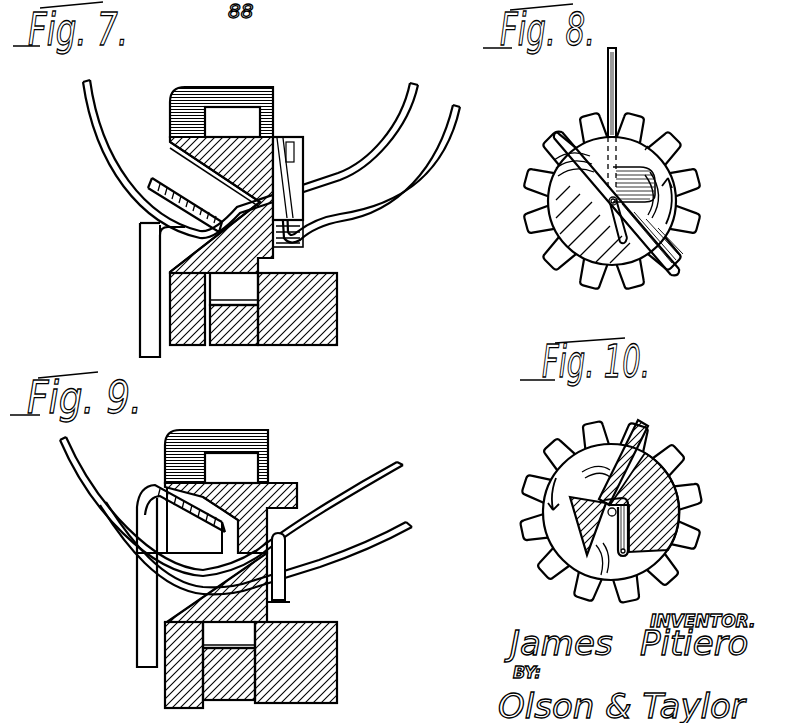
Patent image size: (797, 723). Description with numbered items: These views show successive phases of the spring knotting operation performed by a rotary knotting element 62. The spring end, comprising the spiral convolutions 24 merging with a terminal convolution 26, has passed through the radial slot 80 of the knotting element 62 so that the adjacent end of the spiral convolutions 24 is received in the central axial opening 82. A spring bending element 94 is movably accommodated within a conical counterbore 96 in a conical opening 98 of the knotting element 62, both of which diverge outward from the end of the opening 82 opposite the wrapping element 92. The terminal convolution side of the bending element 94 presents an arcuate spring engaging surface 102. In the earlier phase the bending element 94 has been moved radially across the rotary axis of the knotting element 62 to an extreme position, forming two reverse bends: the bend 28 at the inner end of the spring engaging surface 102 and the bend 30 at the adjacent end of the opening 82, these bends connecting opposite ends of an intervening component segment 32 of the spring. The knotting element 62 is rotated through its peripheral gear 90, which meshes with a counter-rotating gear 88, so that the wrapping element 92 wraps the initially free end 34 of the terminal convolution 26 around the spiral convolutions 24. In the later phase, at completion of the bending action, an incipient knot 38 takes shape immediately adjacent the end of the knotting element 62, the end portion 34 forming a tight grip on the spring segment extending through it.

In FIG. 9, the spiral convolutions 24 is at (395, 500).
In FIG. 8, the terminal convolution 26 is at (621, 63).
In FIG. 10, the terminal convolution 26 is at (660, 553).
In FIG. 7, the reverse bend 28 is at (230, 275).
In FIG. 9, the reverse bend 28 is at (215, 579).
In FIG. 7, the reverse bend 30 is at (305, 243).
In FIG. 9, the reverse bend 30 is at (263, 548).
In FIG. 7, the component segment 32 is at (227, 266).
In FIG. 9, the component segment 32 is at (152, 582).
In FIG. 8, the free end 34 is at (613, 201).
In FIG. 9, the free end 34 is at (272, 598).
In FIG. 10, the free end 34 is at (577, 557).
In FIG. 8, the knot 38 is at (618, 204).
In FIG. 9, the knot 38 is at (280, 545).
In FIG. 10, the knot 38 is at (620, 511).
In FIG. 7, the rotary knotting element 62 is at (262, 263).
In FIG. 8, the rotary knotting element 62 is at (552, 246).
In FIG. 9, the rotary knotting element 62 is at (258, 628).
In FIG. 10, the radial slot 80 is at (648, 453).
In FIG. 7, the axial opening 82 is at (295, 190).
In FIG. 7, the counter-rotating gear 88 is at (245, 330).
In FIG. 7, the gear 90 is at (245, 287).
In FIG. 7, the wrapping element 92 is at (290, 147).
In FIG. 8, the wrapping element 92 is at (645, 150).
In FIG. 9, the wrapping element 92 is at (278, 482).
In FIG. 10, the wrapping element 92 is at (567, 537).
In FIG. 7, the spring bending element 94 is at (166, 170).
In FIG. 9, the spring bending element 94 is at (180, 485).
In FIG. 7, the conical counterbore 96 is at (165, 158).
In FIG. 9, the conical counterbore 96 is at (240, 598).
In FIG. 7, the conical opening 98 is at (185, 205).
In FIG. 9, the conical opening 98 is at (227, 557).
In FIG. 7, the spring engaging surface 102 is at (170, 218).